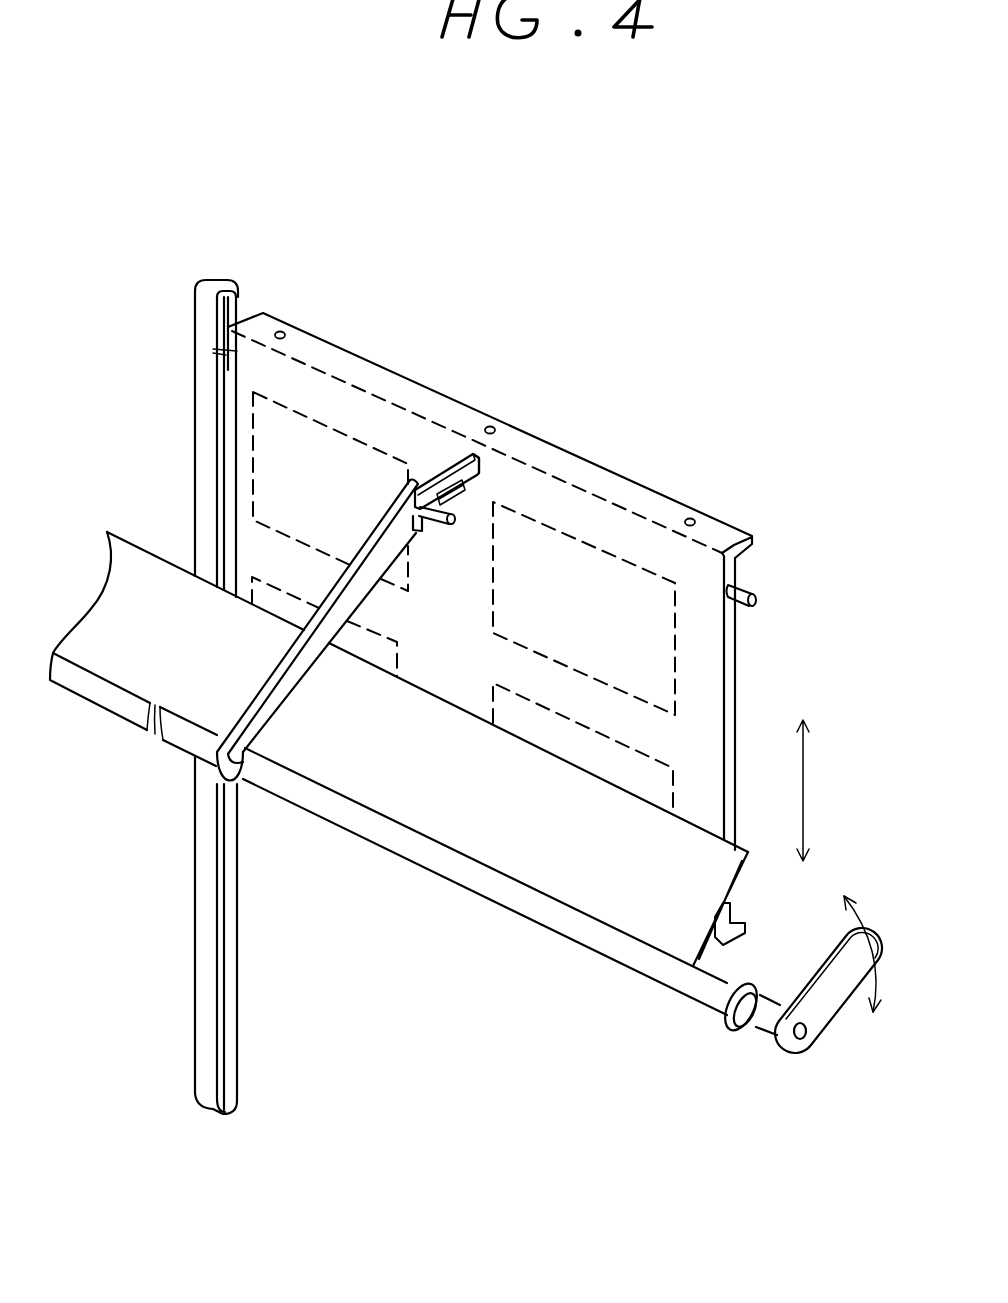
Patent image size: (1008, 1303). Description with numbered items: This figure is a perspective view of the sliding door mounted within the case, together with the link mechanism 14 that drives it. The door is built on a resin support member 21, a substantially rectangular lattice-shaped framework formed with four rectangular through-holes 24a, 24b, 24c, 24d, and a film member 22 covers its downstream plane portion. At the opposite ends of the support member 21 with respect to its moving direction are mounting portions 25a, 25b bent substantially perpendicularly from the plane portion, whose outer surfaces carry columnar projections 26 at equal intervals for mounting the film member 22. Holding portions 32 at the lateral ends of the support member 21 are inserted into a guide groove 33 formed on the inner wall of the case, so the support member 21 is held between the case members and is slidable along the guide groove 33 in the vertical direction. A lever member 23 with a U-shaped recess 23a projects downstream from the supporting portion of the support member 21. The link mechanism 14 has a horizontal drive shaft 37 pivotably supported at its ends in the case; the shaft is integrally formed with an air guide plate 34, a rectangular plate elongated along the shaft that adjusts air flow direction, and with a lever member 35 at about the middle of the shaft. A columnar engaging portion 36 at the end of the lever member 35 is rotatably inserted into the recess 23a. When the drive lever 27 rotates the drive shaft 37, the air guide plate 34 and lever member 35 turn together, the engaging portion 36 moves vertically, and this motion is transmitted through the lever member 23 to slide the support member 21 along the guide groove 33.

The link mechanism 14 is at (554, 939).
The support member 21 is at (735, 673).
The film member 22 is at (578, 500).
The lever member 23 is at (440, 467).
The U-shaped recess 23a is at (484, 482).
The through-hole (opening) 24a is at (273, 597).
The through-hole (opening) 24b is at (600, 590).
The through-hole (opening) 24c is at (327, 447).
The through-hole (opening) 24d is at (673, 770).
The mounting portion 25a is at (753, 923).
The mounting portion 25b is at (752, 537).
The columnar projections 26 is at (284, 332).
The drive lever 27 is at (822, 1008).
The holding portions 32 is at (758, 598).
The guide groove 33 is at (214, 284).
The air guide plate 34 is at (490, 822).
The lever member 35 is at (375, 578).
The engaging portion 36 is at (475, 517).
The drive shaft 37 is at (703, 993).